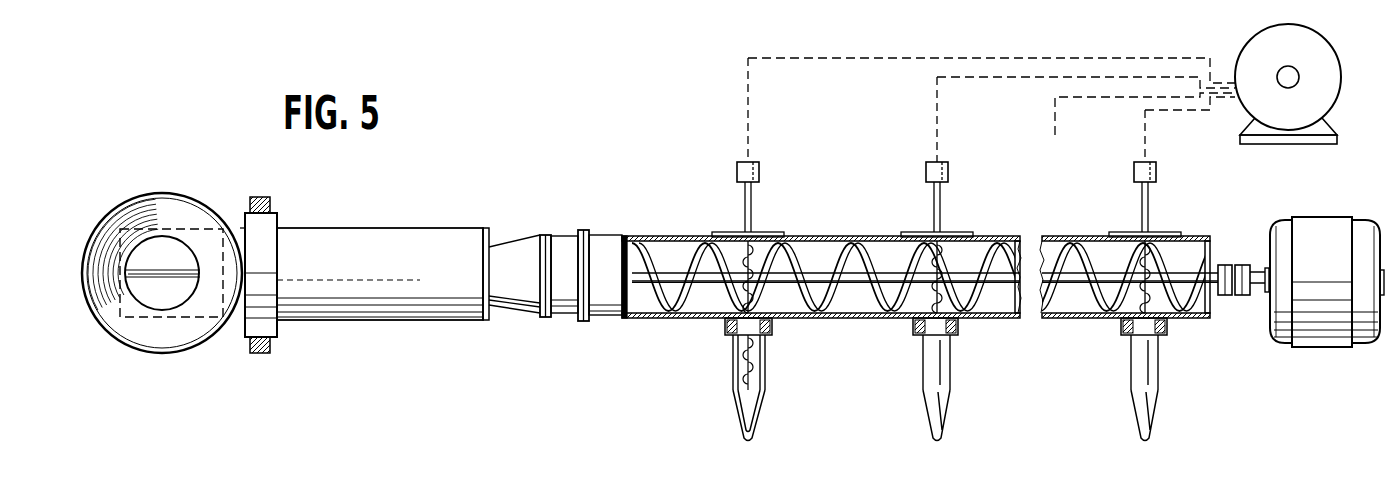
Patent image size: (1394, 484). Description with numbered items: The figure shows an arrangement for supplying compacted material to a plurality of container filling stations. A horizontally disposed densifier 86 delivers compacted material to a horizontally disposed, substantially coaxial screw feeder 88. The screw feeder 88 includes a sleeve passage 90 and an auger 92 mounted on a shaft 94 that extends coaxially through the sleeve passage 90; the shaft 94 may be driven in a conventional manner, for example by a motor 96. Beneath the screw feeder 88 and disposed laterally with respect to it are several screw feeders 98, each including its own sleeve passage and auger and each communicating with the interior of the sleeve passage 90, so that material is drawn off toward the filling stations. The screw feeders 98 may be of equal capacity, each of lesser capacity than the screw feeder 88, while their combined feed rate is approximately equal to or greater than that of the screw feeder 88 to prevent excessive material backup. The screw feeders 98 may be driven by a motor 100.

The densifier 86 is at (420, 235).
The screw feeder 88 is at (865, 240).
The sleeve passage 90 is at (818, 237).
The auger 92 is at (990, 262).
The shaft 94 is at (1085, 280).
The motor 96 is at (1326, 347).
The screw feeders 98 is at (765, 368).
The motor 100 is at (1342, 73).